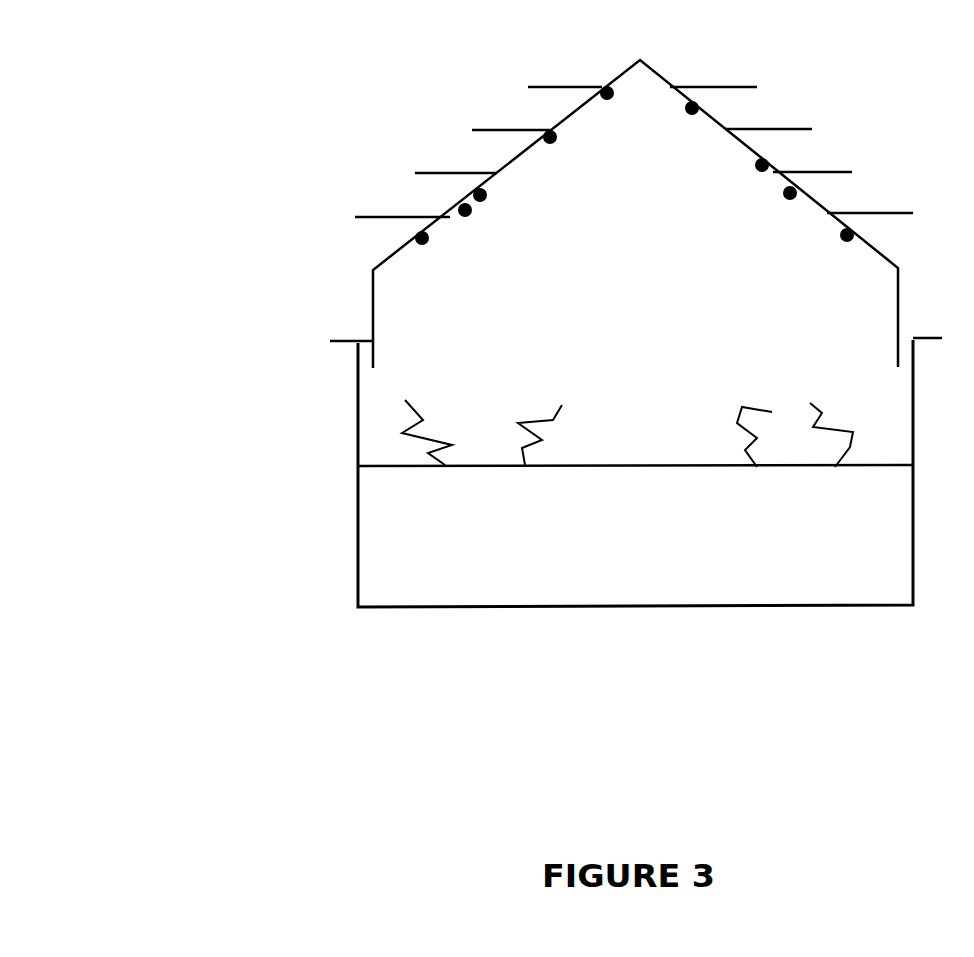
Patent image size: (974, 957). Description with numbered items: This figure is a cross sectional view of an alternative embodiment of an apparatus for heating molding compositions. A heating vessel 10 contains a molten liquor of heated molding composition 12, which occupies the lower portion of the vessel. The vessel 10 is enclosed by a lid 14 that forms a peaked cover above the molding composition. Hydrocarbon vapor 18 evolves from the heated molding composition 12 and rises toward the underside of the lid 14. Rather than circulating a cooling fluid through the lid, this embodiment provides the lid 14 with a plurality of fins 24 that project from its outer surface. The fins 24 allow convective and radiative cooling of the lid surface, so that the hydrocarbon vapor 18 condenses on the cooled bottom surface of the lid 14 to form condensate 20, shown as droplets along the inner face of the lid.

The heating vessel 10 is at (352, 530).
The heated molding composition 12 is at (635, 518).
The lid 14 is at (353, 327).
The hydrocarbon vapor 18 is at (627, 433).
The condensate 20 is at (840, 257).
The fins 24 is at (510, 87).